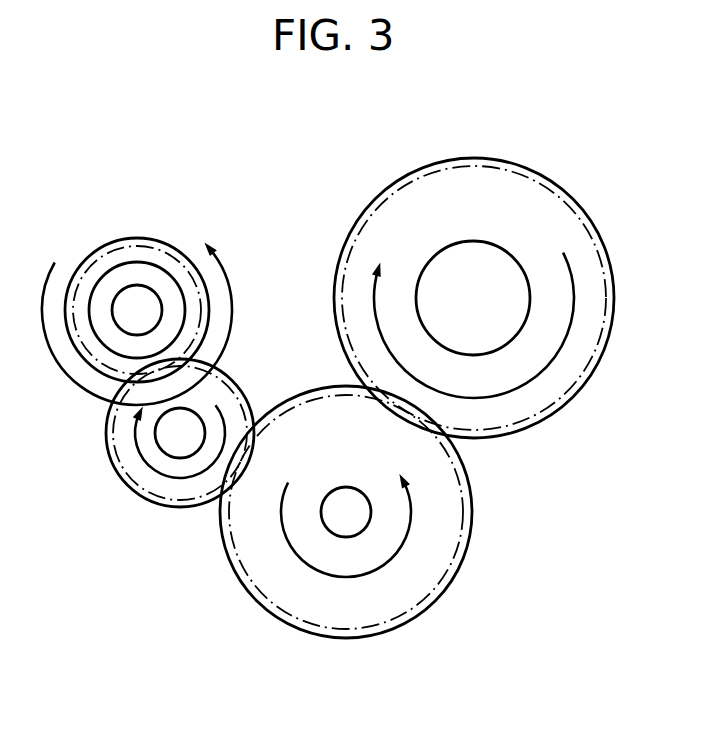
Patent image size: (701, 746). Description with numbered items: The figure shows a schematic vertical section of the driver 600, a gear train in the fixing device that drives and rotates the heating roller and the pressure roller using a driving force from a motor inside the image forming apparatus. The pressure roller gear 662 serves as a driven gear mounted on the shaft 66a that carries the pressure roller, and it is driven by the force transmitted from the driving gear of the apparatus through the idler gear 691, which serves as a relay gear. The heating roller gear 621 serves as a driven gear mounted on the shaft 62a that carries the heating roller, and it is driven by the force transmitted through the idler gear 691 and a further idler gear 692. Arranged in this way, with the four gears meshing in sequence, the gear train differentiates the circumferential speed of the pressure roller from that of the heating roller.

The driver 600 is at (272, 156).
The heating roller gear 621 is at (150, 252).
The shaft 62a is at (123, 275).
The idler gear 692 is at (155, 485).
The pressure roller gear 662 is at (445, 182).
The shaft 66a is at (487, 253).
The idler gear 691 is at (447, 552).